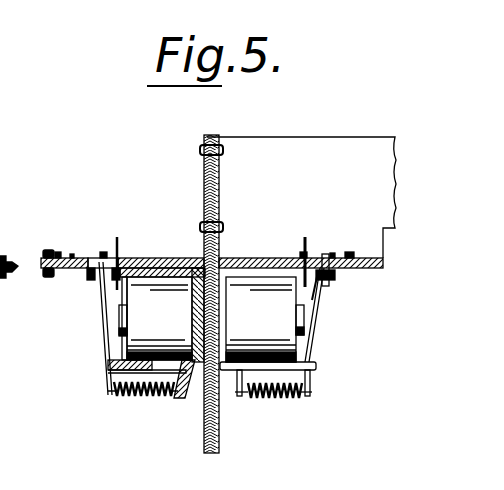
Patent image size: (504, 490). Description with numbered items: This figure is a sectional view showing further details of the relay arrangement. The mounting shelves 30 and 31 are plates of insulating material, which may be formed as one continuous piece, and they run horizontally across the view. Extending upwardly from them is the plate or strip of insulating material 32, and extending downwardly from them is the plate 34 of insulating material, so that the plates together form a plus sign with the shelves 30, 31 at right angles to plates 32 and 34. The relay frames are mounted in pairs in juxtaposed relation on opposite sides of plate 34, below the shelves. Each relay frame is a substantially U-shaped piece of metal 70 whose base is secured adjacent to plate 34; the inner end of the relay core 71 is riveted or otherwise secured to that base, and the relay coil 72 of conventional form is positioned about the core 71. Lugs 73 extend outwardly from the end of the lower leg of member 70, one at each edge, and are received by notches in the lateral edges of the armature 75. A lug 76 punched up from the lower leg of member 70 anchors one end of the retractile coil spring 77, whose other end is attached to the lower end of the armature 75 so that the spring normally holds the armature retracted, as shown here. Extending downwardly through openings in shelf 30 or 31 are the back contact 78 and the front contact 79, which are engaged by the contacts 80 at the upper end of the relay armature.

The mounting shelf 30 is at (383, 264).
The mounting shelf 31 is at (42, 259).
The plate or strip of insulating material 32 is at (204, 186).
The plate of insulating material 34 is at (204, 410).
The U-shaped piece of metal 70 is at (232, 371).
The relay core 71 is at (304, 322).
The relay coil 72 is at (296, 349).
The lugs 73 is at (316, 368).
The armature 75 is at (312, 358).
The lug 76 is at (242, 396).
The retractile coil spring 77 is at (285, 398).
The back contact 78 is at (335, 276).
The front contact 79 is at (302, 258).
The contacts 80 is at (318, 290).